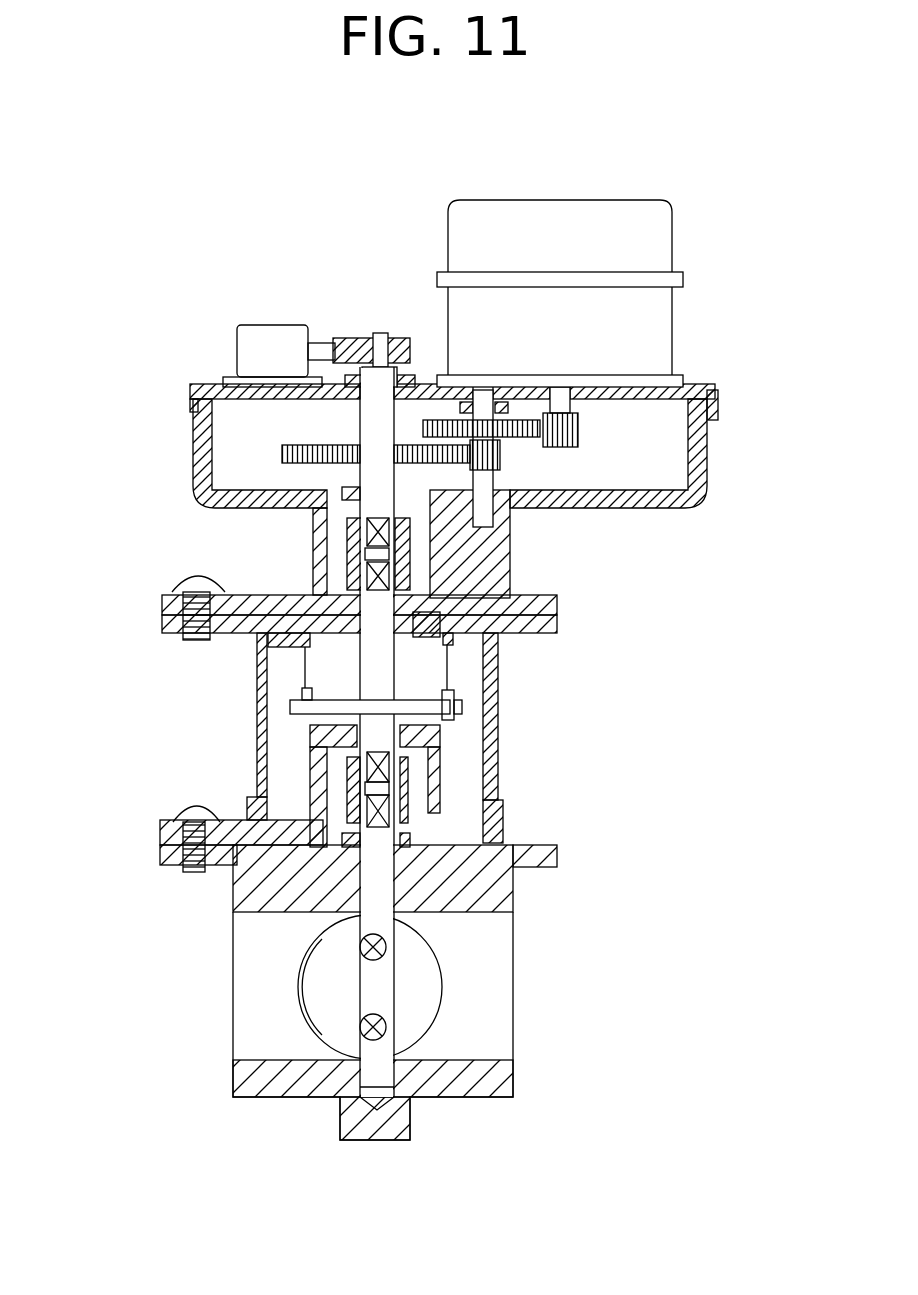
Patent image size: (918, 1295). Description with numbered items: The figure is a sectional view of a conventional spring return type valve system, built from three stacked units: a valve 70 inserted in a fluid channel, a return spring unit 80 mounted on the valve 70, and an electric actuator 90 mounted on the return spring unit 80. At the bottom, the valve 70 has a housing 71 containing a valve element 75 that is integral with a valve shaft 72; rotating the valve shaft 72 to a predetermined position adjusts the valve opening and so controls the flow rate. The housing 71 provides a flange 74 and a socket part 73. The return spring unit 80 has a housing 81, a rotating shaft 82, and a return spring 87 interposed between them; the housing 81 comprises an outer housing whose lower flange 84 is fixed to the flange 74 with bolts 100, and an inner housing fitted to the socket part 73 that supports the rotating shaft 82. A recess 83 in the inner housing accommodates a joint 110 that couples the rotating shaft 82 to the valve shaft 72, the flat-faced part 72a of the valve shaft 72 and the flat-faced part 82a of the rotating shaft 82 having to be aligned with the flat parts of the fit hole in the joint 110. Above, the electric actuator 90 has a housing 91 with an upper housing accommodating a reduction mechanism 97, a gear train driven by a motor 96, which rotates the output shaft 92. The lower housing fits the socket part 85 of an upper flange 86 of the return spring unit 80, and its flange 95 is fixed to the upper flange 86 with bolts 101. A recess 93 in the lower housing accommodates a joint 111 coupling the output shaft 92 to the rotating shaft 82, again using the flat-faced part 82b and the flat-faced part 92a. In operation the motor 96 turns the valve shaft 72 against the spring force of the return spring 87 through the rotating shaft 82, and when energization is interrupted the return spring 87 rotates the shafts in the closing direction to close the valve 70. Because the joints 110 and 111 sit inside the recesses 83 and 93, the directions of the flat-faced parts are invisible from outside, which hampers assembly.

The valve 70 is at (322, 974).
The housing 71 is at (250, 1075).
The valve shaft 72 is at (383, 975).
The flat-faced part 72a is at (362, 808).
The socket part 73 is at (470, 832).
The flange 74 is at (160, 856).
The valve element 75 is at (410, 1005).
The return spring unit 80 is at (323, 738).
The housing 81 is at (257, 665).
The rotating shaft 82 is at (385, 658).
The flat-faced part 82a is at (362, 762).
The flat-faced part 82b is at (362, 573).
The recess 83 is at (498, 788).
The lower flange 84 is at (160, 830).
The socket part 85 is at (433, 592).
The upper flange 86 is at (162, 620).
The return spring 87 is at (452, 700).
The electric actuator 90 is at (425, 430).
The housing 91 is at (205, 388).
The output shaft 92 is at (380, 432).
The flat-faced part 92a is at (367, 530).
The recess 93 is at (512, 578).
The flange 95 is at (162, 600).
The motor 96 is at (648, 316).
The reduction mechanism 97 is at (593, 435).
The bolts 100 is at (183, 815).
The bolts 101 is at (180, 590).
The joint 110 is at (435, 760).
The joint 111 is at (462, 548).